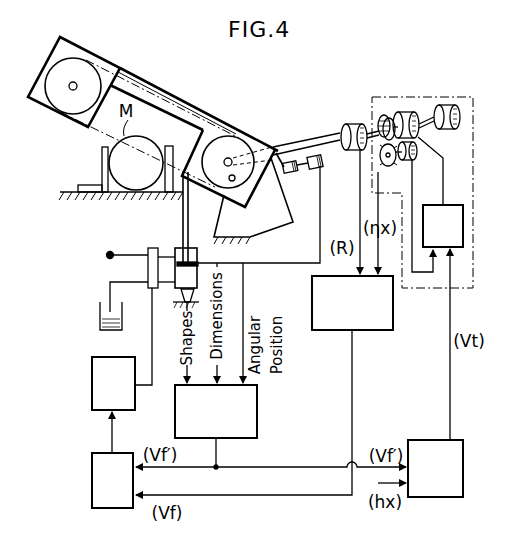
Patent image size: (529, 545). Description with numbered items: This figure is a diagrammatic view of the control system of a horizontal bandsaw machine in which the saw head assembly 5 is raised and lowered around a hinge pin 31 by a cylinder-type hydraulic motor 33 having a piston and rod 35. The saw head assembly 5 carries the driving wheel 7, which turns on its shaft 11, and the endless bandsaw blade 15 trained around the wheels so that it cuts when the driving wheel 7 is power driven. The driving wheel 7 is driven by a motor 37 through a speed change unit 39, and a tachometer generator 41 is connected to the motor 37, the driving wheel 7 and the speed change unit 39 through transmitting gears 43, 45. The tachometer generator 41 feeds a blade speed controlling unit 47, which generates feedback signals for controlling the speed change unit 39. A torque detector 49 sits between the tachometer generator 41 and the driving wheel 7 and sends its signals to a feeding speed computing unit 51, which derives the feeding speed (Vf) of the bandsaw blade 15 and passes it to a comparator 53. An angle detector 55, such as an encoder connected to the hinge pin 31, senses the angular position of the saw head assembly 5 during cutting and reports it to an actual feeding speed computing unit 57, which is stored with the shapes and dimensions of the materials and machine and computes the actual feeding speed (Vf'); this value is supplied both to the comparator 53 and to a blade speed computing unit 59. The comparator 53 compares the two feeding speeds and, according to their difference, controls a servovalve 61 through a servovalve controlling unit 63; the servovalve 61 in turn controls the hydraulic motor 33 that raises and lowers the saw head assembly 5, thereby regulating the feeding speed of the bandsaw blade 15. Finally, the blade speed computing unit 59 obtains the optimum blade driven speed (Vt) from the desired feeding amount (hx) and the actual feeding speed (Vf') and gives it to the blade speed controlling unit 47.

The saw head assembly 5 is at (153, 94).
The driving wheel 7 is at (216, 131).
The shaft 11 is at (231, 157).
The bandsaw blade 15 is at (139, 84).
The hinge pin 31 is at (231, 181).
The hydraulic motor 33 is at (198, 264).
The piston and rod 35 is at (183, 222).
The motor 37 is at (452, 106).
The speed change unit 39 is at (412, 112).
The tachometer generator 41 is at (411, 157).
The gear 43 is at (382, 114).
The gear 45 is at (381, 160).
The blade speed controlling unit 47 is at (443, 226).
The torque detector 49 is at (356, 123).
The feeding speed computing unit 51 is at (352, 303).
The comparator 53 is at (112, 480).
The angle detector 55 is at (316, 157).
The actual feeding speed computing unit 57 is at (216, 411).
The blade speed computing unit 59 is at (435, 468).
The servovalve 61 is at (146, 253).
The servovalve controlling unit 63 is at (113, 383).